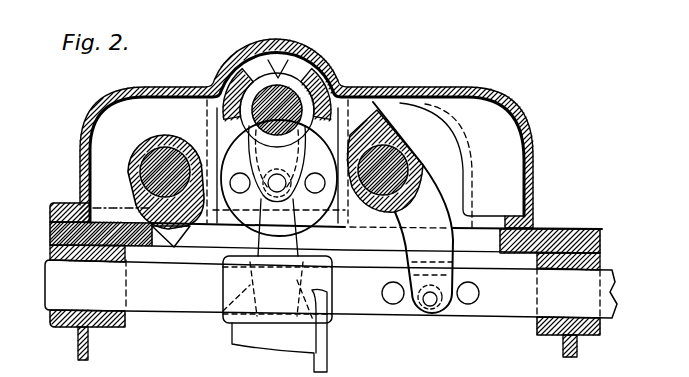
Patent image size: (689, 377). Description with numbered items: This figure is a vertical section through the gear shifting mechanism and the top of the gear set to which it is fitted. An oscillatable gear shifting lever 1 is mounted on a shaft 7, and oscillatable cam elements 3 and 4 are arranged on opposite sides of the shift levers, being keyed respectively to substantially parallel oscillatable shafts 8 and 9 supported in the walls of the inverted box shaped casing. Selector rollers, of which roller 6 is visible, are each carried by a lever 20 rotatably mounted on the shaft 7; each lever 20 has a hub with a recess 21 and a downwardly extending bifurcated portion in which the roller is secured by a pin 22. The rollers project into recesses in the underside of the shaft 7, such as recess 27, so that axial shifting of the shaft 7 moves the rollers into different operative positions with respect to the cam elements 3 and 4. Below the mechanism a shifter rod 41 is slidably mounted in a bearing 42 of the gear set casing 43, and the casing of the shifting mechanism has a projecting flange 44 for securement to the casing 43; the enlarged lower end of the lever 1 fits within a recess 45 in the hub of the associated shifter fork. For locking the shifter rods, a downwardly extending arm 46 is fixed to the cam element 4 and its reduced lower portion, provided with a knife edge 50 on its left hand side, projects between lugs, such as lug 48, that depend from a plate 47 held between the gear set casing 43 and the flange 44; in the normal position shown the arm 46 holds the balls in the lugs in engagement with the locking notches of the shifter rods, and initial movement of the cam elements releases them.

The gear shifting lever 1 is at (318, 323).
The cam element 3 is at (141, 161).
The cam element 4 is at (393, 133).
The roller 6 is at (312, 223).
The shaft 7 is at (279, 76).
The oscillatable shaft 8 is at (164, 153).
The oscillatable shaft 9 is at (395, 169).
The lever 20 is at (214, 123).
The recess 21 is at (257, 50).
The pin 22 is at (282, 176).
The recess 27 is at (216, 133).
The shifter rod 41 is at (483, 319).
The bearing 42 is at (68, 324).
The casing 43 is at (90, 342).
The projecting flange 44 is at (52, 210).
The recess 45 is at (223, 313).
The arm 46 is at (437, 211).
The plate 47 is at (560, 229).
The lug 48 is at (437, 319).
The knife edge 50 is at (407, 319).